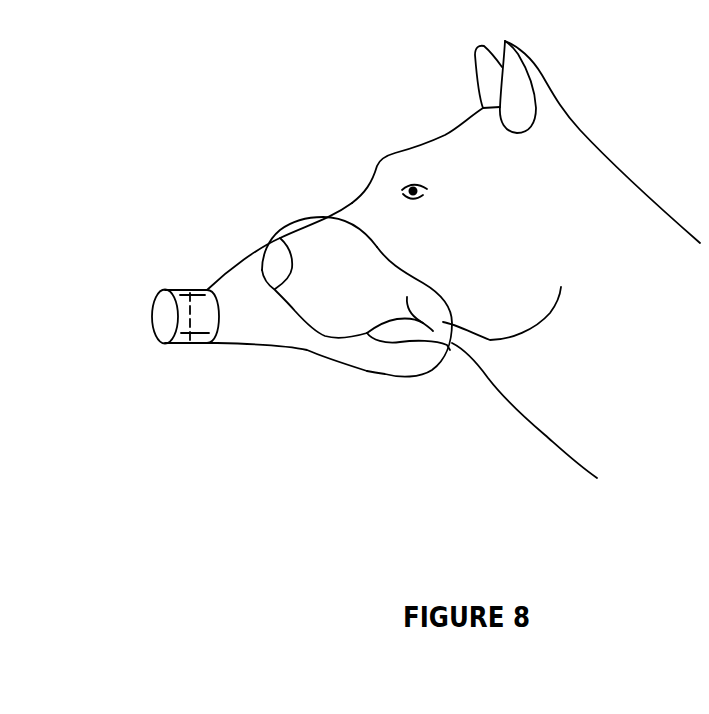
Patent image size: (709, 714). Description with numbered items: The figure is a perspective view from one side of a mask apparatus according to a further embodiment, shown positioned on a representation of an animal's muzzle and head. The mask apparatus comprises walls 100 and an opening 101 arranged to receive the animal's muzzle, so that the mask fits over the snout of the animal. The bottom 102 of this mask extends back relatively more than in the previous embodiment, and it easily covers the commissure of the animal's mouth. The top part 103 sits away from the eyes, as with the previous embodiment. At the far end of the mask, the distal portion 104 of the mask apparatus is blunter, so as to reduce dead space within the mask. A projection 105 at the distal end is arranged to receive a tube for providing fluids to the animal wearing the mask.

The walls 100 is at (288, 328).
The opening 101 is at (349, 221).
The bottom 102 is at (425, 355).
The top part 103 is at (297, 218).
The distal portion 104 is at (240, 323).
The projection 105 is at (183, 293).